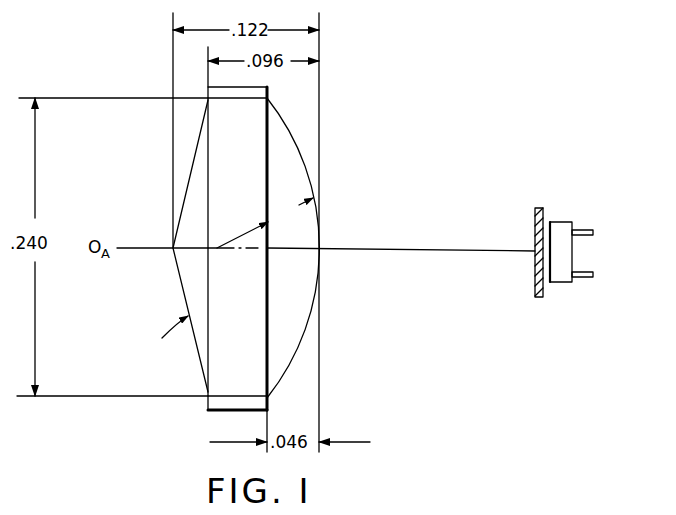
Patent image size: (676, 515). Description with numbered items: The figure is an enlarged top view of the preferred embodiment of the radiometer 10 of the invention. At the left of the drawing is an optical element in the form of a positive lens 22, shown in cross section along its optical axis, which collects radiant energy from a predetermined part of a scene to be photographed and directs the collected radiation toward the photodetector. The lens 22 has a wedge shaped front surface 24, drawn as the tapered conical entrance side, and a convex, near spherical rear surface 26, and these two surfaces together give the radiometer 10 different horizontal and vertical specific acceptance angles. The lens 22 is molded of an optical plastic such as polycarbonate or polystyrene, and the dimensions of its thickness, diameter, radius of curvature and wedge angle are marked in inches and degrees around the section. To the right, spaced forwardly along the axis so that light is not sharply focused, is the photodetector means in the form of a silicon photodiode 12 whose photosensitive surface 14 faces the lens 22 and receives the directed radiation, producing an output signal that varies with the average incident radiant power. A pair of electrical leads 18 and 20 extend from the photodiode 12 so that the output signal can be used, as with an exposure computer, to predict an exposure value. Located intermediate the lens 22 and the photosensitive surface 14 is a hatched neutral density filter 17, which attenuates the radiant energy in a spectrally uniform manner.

The radiometer 10 is at (433, 102).
The silicon photodiode 12 is at (560, 222).
The photosensitive surface 14 is at (548, 282).
The neutral density filter 17 is at (533, 285).
The electrical lead 18 is at (585, 230).
The electrical lead 20 is at (583, 278).
The positive lens 22 is at (303, 153).
The wedge shaped front surface 24 is at (193, 157).
The convex near spherical surface 26 is at (311, 178).